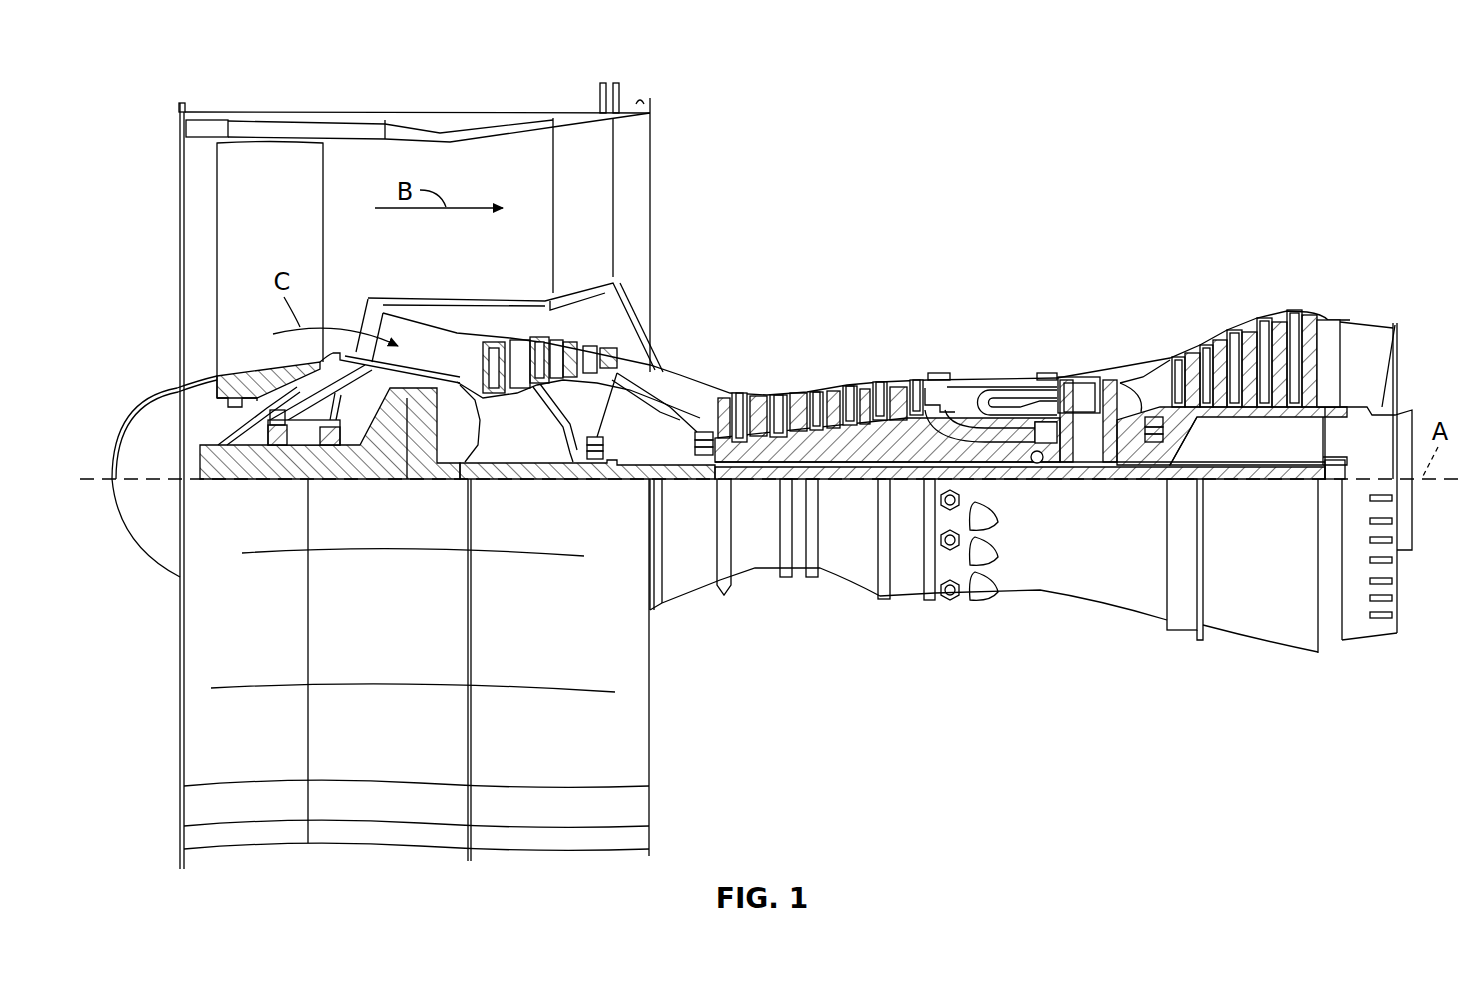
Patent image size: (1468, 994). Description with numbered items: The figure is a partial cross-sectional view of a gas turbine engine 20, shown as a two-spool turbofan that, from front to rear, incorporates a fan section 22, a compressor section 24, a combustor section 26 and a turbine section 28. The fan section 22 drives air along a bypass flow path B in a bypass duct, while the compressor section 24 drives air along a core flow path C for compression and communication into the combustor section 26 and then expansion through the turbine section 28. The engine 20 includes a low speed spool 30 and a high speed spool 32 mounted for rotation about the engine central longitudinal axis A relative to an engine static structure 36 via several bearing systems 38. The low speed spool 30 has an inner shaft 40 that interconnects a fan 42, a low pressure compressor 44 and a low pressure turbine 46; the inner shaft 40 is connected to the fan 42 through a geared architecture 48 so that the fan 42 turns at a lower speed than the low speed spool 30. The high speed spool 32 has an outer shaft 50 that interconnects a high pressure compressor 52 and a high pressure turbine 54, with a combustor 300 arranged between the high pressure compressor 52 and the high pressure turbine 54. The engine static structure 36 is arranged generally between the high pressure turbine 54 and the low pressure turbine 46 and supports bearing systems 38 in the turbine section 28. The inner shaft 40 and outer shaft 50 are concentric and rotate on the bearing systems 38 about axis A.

The gas turbine engine 20 is at (1286, 79).
The fan section 22 is at (270, 110).
The compressor section 24 is at (792, 306).
The combustor section 26 is at (982, 294).
The turbine section 28 is at (1161, 273).
The low speed spool 30 is at (866, 487).
The high speed spool 32 is at (900, 400).
The engine static structure 36 is at (904, 602).
The bearing systems 38 is at (280, 432).
The inner shaft 40 is at (695, 470).
The fan 42 is at (276, 213).
The low pressure compressor 44 is at (565, 360).
The low pressure turbine 46 is at (1250, 330).
The geared architecture 48 is at (422, 450).
The outer shaft 50 is at (1045, 458).
The high pressure compressor 52 is at (830, 445).
The high pressure turbine 54 is at (1083, 375).
The combustor 300 is at (1003, 403).